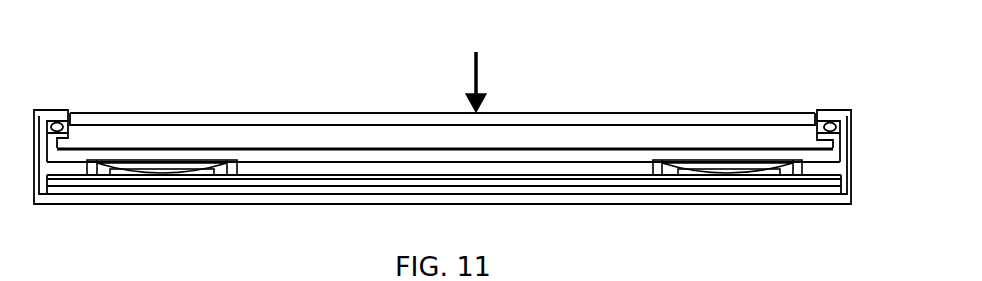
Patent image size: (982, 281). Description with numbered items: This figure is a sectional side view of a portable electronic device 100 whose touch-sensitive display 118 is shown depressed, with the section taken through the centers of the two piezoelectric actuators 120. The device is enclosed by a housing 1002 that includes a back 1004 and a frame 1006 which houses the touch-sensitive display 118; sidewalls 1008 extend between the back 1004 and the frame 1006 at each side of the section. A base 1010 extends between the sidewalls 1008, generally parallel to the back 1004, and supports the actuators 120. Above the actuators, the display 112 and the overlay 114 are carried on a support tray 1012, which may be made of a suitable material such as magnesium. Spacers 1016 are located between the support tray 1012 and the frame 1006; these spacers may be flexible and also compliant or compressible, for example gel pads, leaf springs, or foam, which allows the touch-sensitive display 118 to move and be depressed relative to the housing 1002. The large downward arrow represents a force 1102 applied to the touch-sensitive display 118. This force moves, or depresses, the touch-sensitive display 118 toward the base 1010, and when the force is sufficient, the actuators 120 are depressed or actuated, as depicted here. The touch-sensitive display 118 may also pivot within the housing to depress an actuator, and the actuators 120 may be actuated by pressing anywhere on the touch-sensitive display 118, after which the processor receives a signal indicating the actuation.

The portable electronic device 100 is at (851, 63).
The display 112 is at (313, 132).
The overlay 114 is at (387, 118).
The touch-sensitive display 118 is at (267, 113).
The piezoelectric actuators 120 is at (170, 165).
The housing 1002 is at (625, 205).
The back 1004 is at (557, 200).
The frame 1006 is at (47, 109).
The sidewalls 1008 is at (852, 185).
The base 1010 is at (470, 178).
The support tray 1012 is at (405, 152).
The spacers 1016 is at (829, 121).
The force 1102 is at (478, 83).